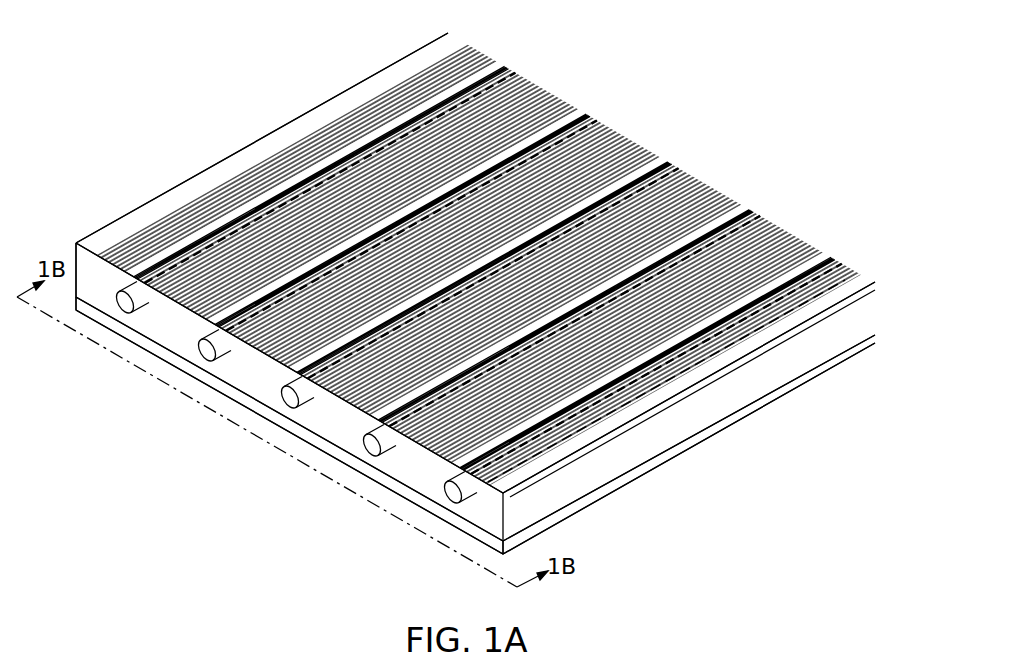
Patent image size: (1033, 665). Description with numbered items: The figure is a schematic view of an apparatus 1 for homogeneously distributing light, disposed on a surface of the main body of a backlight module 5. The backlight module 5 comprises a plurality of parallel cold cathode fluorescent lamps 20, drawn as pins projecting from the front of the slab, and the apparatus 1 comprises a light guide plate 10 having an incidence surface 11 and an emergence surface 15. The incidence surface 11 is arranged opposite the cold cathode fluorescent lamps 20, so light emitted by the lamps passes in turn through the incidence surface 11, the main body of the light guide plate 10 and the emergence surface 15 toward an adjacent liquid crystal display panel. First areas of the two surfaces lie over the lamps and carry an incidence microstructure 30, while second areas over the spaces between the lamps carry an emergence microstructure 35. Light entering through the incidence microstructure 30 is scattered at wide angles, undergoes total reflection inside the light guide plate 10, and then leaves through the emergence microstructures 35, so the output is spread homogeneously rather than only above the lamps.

The apparatus 1 is at (255, 66).
The backlight module 5 is at (773, 372).
The light guide plate 10 is at (200, 180).
The incidence surface 11 is at (496, 496).
The emergence surface 15 is at (540, 468).
The cold cathode fluorescent lamps 20 is at (372, 437).
The incidence microstructure 30 is at (372, 415).
The emergence microstructure 35 is at (352, 395).